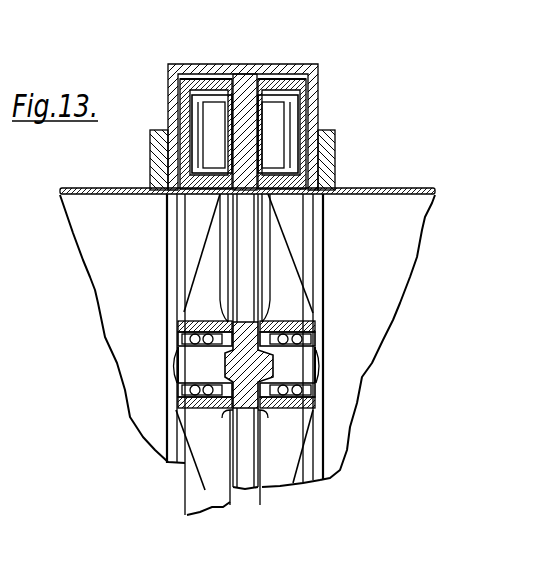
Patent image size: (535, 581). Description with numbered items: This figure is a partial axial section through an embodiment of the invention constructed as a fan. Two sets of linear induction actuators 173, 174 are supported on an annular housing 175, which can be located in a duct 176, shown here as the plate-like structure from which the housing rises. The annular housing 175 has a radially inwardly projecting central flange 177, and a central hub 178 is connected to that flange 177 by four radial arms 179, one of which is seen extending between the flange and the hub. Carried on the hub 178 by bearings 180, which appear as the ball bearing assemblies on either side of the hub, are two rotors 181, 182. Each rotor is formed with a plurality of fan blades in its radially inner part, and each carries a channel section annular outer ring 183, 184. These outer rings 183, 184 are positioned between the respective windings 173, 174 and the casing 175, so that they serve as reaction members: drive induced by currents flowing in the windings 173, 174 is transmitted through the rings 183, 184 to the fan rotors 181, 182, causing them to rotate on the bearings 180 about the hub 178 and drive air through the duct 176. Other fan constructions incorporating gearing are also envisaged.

The linear induction actuator winding 173 is at (200, 114).
The linear induction actuator winding 174 is at (277, 107).
The annular housing 175 is at (198, 64).
The duct 176 is at (93, 188).
The central flange 177 is at (243, 128).
The central hub 178 is at (298, 367).
The radial arm 179 is at (247, 243).
The bearing 180 is at (185, 350).
The rotor 181 is at (186, 296).
The rotor 182 is at (300, 310).
The channel section annular outer ring 183 is at (180, 97).
The channel section annular outer ring 184 is at (300, 88).